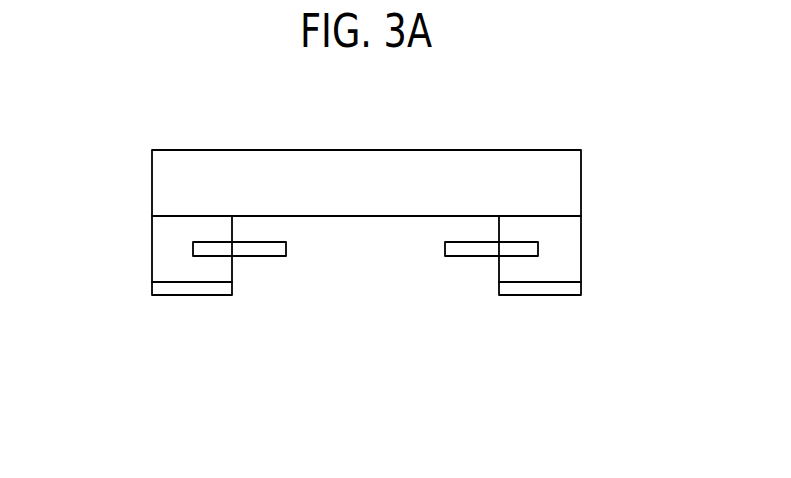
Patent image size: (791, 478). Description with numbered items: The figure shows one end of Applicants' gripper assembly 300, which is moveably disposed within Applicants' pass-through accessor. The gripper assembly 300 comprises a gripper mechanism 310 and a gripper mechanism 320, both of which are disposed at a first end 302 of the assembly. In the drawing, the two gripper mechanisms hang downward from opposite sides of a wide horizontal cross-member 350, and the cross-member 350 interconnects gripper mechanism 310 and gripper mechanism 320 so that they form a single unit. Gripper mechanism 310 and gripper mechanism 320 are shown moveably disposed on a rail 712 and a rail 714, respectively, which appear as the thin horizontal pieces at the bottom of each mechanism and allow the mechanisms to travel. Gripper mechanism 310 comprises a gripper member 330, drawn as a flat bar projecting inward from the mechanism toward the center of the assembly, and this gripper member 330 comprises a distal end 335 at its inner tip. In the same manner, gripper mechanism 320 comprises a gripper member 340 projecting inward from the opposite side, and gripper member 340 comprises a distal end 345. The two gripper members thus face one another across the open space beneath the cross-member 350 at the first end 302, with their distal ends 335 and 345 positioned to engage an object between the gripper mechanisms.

The gripper assembly 300 is at (595, 130).
The first end 302 is at (354, 338).
The gripper mechanism 310 is at (595, 258).
The gripper mechanism 320 is at (138, 259).
The gripper member 330 is at (479, 257).
The distal end 335 is at (459, 247).
The gripper member 340 is at (256, 260).
The distal end 345 is at (273, 250).
The cross-member 350 is at (384, 197).
The rail 712 is at (199, 288).
The rail 714 is at (538, 288).